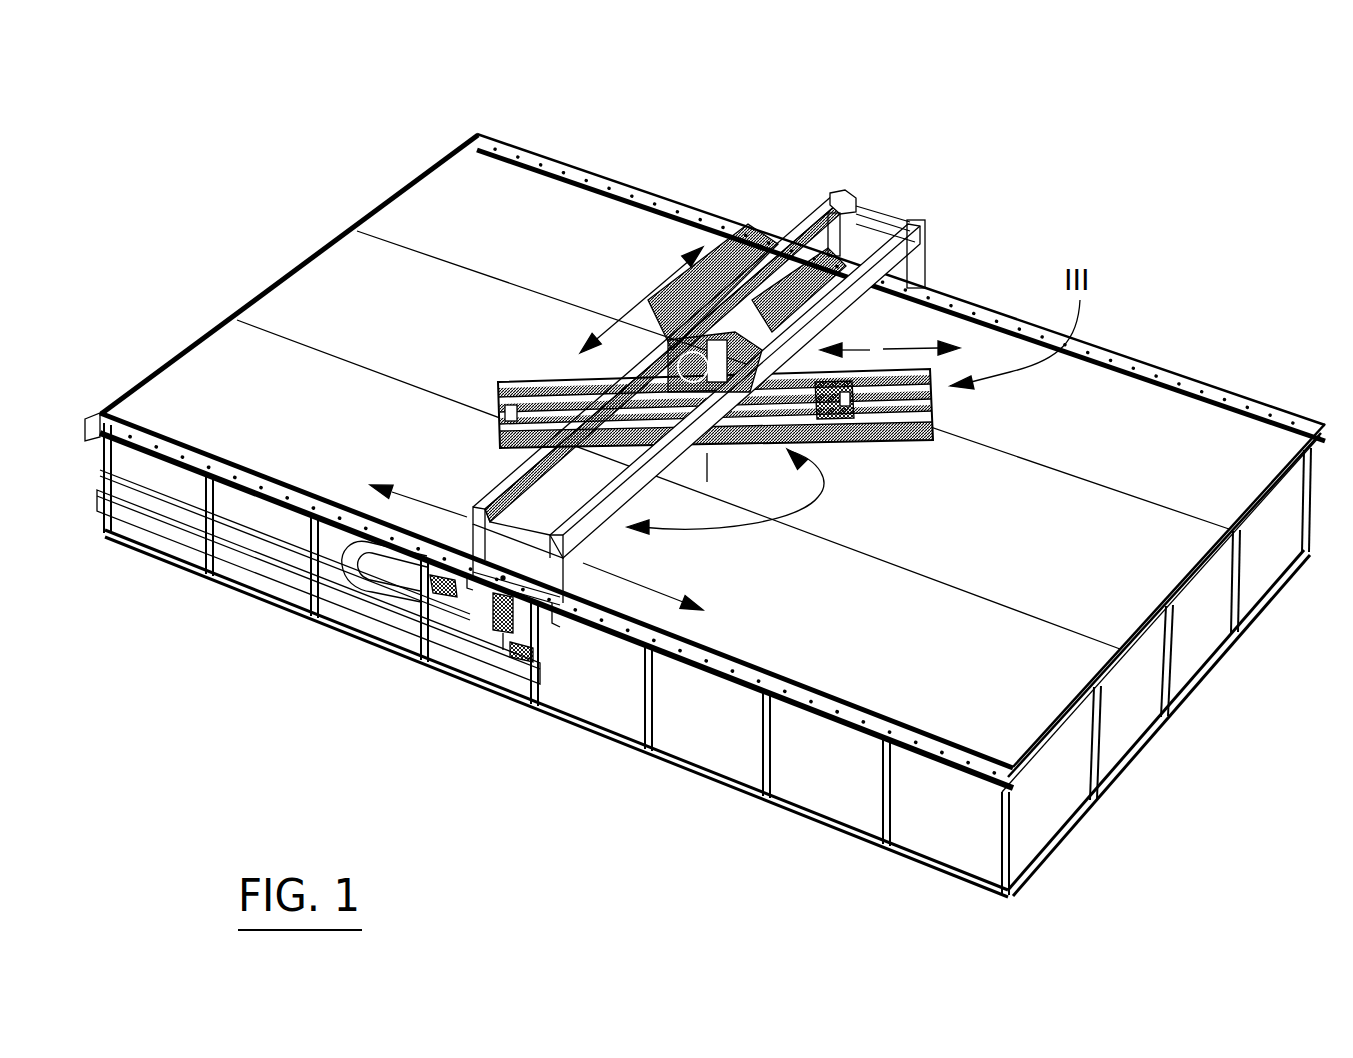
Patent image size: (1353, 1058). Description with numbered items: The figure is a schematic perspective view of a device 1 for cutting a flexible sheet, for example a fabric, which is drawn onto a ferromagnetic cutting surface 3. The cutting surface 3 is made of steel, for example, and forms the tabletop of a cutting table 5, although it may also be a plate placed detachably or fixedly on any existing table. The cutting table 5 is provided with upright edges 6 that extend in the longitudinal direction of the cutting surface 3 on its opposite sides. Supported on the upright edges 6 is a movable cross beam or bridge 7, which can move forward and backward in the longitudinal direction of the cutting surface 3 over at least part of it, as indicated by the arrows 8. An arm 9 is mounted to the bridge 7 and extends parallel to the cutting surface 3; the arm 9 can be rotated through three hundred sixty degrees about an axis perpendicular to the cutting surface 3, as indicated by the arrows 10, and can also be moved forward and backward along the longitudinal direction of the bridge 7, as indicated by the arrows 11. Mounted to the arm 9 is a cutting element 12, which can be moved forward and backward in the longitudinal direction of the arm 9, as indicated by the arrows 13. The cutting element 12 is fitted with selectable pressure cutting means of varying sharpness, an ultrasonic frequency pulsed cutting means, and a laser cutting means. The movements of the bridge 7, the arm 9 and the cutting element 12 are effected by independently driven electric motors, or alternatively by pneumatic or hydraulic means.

The device 1 is at (1215, 125).
The cutting surface 3 is at (1180, 405).
The cutting table 5 is at (1052, 815).
The upright edges 6 is at (548, 162).
The bridge 7 is at (918, 218).
The arrows 8 is at (628, 600).
The arm 9 is at (518, 383).
The arrows 10 is at (836, 512).
The arrows 11 is at (643, 286).
The cutting element 12 is at (840, 410).
The arrows 13 is at (936, 322).